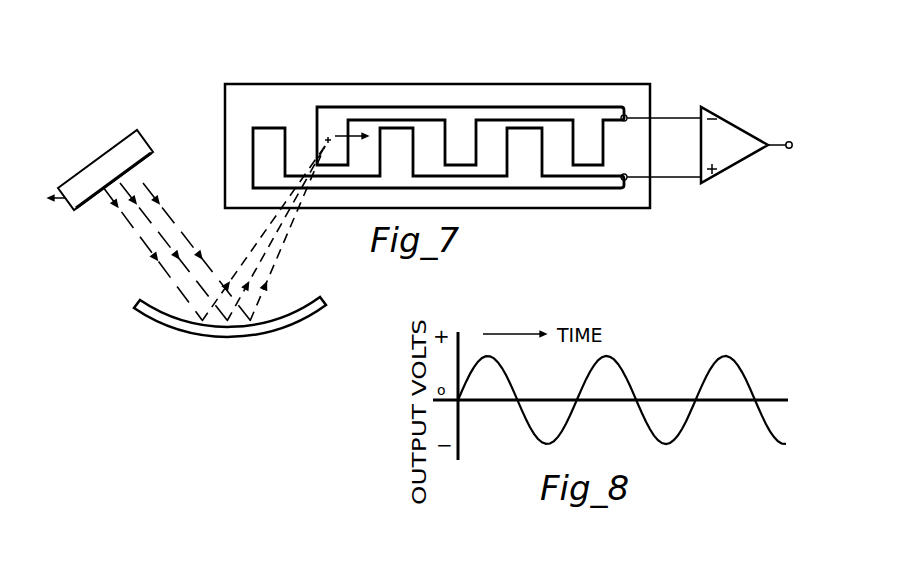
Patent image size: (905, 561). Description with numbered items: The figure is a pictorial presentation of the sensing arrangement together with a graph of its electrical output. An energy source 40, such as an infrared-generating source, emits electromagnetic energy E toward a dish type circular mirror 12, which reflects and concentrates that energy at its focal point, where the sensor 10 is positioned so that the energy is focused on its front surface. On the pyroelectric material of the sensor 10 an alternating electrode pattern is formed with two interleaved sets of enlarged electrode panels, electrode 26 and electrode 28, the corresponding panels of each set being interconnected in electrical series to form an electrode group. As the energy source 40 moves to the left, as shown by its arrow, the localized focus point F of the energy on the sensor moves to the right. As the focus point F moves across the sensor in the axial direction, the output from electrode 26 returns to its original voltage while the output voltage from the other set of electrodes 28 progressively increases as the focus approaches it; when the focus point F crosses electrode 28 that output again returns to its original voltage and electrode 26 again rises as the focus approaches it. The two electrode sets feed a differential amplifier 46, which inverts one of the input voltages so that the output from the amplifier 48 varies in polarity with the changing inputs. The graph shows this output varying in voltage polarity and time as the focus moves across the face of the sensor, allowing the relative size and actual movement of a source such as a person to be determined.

The sensor 10 is at (591, 48).
The electrode 26 is at (323, 116).
The electrode 28 is at (260, 137).
The differential amplifier 46 is at (728, 113).
The output from the amplifier 48 is at (787, 150).
The energy source 40 is at (124, 141).
The mirror 12 is at (183, 322).
The electromagnetic energy E is at (176, 251).
The focus point F is at (333, 144).